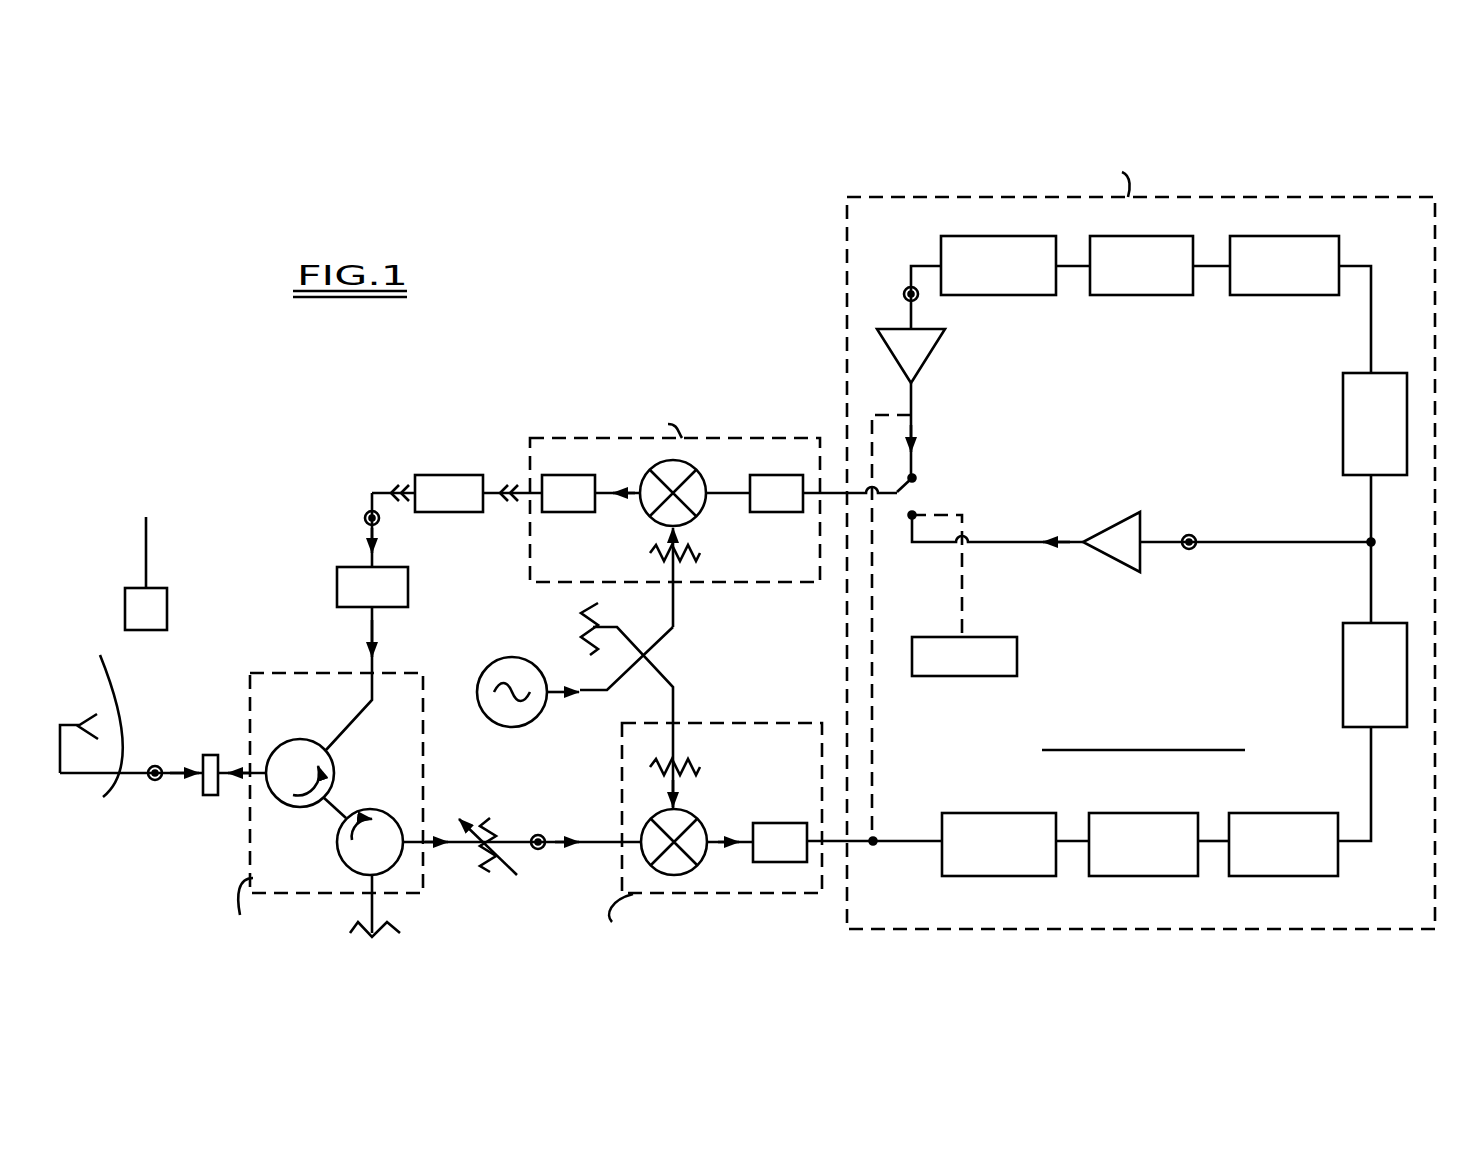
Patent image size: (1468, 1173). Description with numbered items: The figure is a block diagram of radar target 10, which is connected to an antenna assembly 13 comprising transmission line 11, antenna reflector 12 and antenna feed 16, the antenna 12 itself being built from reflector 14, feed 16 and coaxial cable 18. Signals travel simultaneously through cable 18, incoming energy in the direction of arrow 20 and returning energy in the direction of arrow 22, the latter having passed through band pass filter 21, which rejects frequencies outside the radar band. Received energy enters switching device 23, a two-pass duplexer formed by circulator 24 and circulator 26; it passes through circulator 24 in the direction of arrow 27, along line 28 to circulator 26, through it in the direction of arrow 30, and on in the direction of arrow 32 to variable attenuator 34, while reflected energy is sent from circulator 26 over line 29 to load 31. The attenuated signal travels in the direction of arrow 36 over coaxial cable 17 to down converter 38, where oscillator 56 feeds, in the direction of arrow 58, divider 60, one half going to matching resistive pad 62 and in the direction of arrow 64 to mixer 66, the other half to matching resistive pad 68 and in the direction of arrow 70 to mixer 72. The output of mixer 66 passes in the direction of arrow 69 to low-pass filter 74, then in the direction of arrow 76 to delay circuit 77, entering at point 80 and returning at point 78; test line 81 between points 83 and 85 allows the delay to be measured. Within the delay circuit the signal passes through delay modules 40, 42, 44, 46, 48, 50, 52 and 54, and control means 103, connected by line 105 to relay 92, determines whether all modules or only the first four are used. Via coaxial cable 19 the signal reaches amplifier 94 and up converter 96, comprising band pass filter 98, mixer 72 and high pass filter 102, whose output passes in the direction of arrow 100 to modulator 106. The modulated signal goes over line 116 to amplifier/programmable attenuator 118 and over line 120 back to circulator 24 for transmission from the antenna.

The radar target 10 is at (707, 326).
The transmission line 11 is at (145, 776).
The antenna reflector 12 is at (128, 677).
The antenna assembly 13 is at (131, 624).
The reflector 14 is at (124, 740).
The antenna feed 16 is at (86, 722).
The coaxial cable 17 is at (600, 840).
The coaxial cable 18 is at (95, 778).
The coaxial cable 19 is at (920, 309).
The arrow 20 is at (193, 770).
The band pass filter 21 is at (208, 755).
The arrow 22 is at (237, 778).
The switching device 23 is at (270, 672).
The circulator 24 is at (285, 743).
The circulator 26 is at (338, 853).
The arrow 27 is at (289, 773).
The line 28 is at (345, 815).
The line 29 is at (368, 918).
The arrow 30 is at (378, 854).
The load 31 is at (403, 937).
The arrow 32 is at (437, 840).
The variable attenuator 34 is at (495, 818).
The arrow 36 is at (570, 845).
The down converter 38 is at (785, 723).
The delay module 40 is at (983, 859).
The delay module 42 is at (1127, 859).
The delay module 44 is at (1267, 859).
The delay module 46 is at (1359, 690).
The delay module 48 is at (1359, 439).
The delay module 50 is at (1268, 282).
The delay module 52 is at (1125, 282).
The delay module 54 is at (982, 282).
The oscillator 56 is at (494, 668).
The arrow 58 is at (580, 696).
The divider 60 is at (642, 656).
The matching resistive pad 62 is at (700, 767).
The arrow 64 is at (681, 798).
The mixer 66 is at (697, 866).
The matching resistive pad 68 is at (650, 554).
The arrow 69 is at (731, 840).
The arrow 70 is at (684, 535).
The mixer 72 is at (696, 470).
The filter 74 is at (766, 857).
The arrow 76 is at (851, 845).
The delay circuit 77 is at (1082, 931).
The point 78 is at (916, 476).
The point 80 is at (880, 841).
The test line 81 is at (874, 729).
The point 83 is at (876, 843).
The point 85 is at (915, 414).
The relay 92 is at (912, 494).
The amplifier 94 is at (926, 350).
The up converter circuit 96 is at (712, 396).
The band pass filter 98 is at (762, 508).
The arrow 100 is at (616, 490).
The high pass filter 102 is at (548, 508).
The means for controlling the number of delay modules 103 is at (942, 671).
The line 105 is at (963, 595).
The modulator 106 is at (428, 508).
The line 116 is at (372, 492).
The radio-frequency amplifier/programmable attenuator 118 is at (350, 602).
The line 120 is at (372, 636).